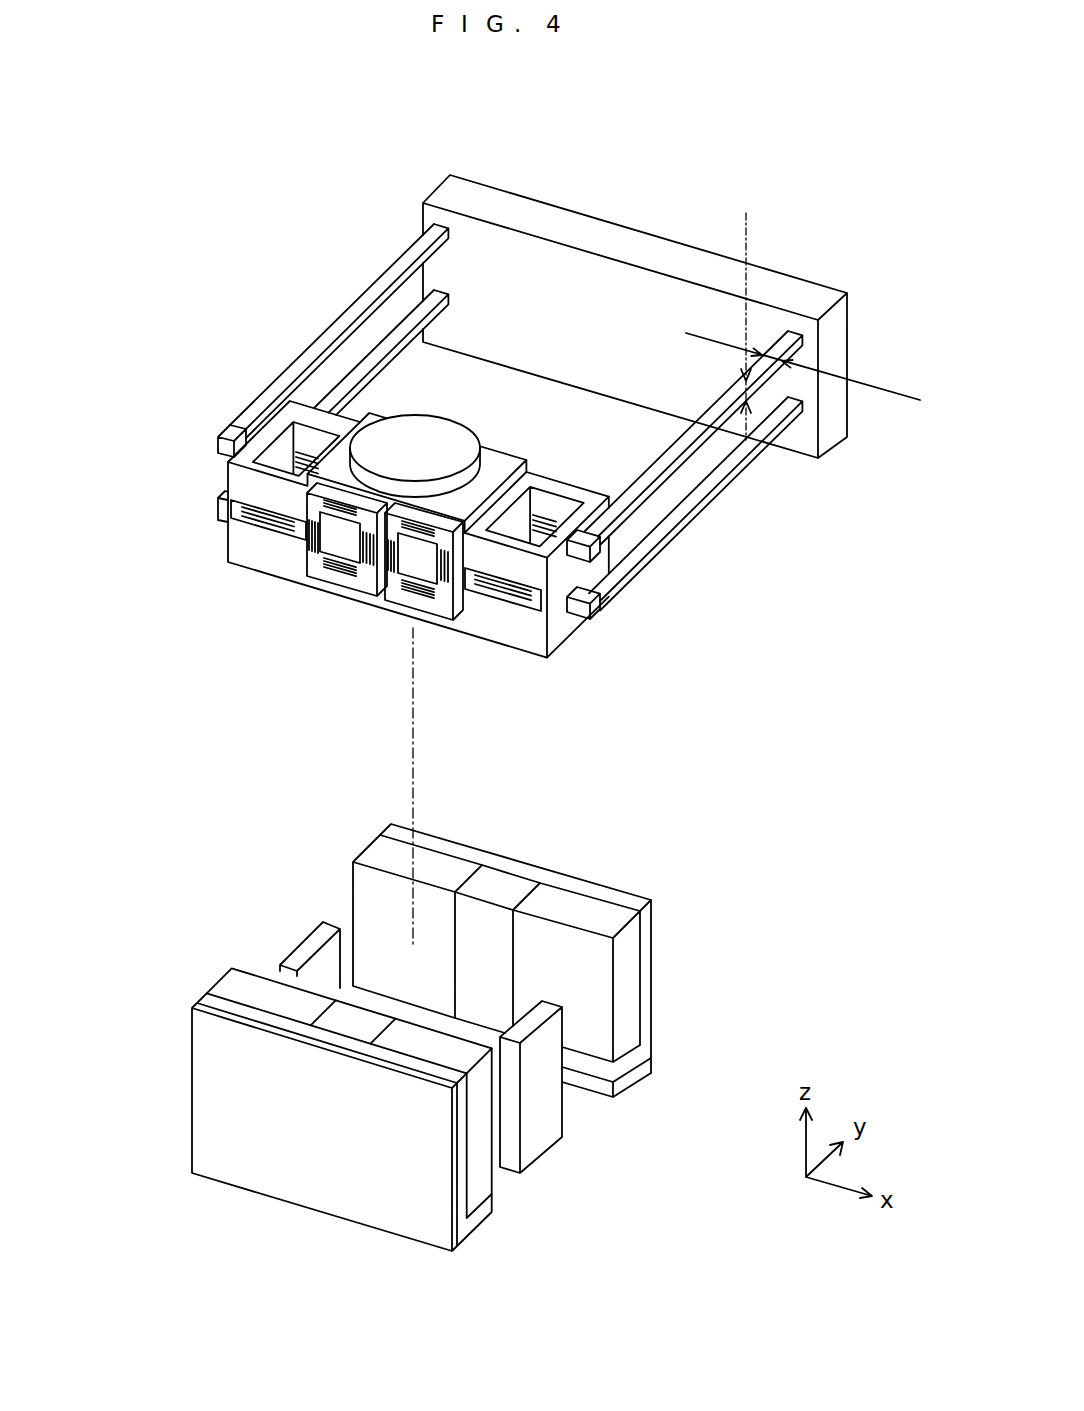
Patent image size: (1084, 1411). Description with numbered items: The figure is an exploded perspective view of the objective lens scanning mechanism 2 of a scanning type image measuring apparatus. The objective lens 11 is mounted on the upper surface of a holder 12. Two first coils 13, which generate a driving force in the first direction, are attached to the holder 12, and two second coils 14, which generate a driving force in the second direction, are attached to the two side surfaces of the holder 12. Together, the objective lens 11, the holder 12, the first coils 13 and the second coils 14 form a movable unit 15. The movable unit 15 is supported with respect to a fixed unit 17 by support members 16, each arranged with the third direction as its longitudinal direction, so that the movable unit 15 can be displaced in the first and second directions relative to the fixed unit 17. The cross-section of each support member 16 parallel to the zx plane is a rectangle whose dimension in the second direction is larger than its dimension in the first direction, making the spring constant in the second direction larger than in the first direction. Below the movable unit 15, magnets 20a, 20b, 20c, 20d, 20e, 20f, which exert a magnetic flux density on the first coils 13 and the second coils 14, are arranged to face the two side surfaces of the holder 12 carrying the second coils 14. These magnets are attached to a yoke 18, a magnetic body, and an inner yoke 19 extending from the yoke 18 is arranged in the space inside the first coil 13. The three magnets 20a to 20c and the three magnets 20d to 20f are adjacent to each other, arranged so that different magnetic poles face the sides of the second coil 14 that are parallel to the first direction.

The objective lens scanning mechanism 2 is at (519, 442).
The objective lens 11 is at (392, 438).
The holder 12 is at (251, 460).
The first coil 13 is at (262, 522).
The second coil 14 is at (322, 579).
The movable unit 15 is at (363, 536).
The support member 16 is at (417, 253).
The fixed unit 17 is at (545, 200).
The yoke 18 is at (427, 832).
The inner yoke 19 is at (307, 947).
The magnet 20a is at (258, 1000).
The magnet 20b is at (337, 1028).
The magnet 20c is at (423, 1048).
The magnet 20d is at (380, 850).
The magnet 20e is at (505, 870).
The magnet 20f is at (580, 905).